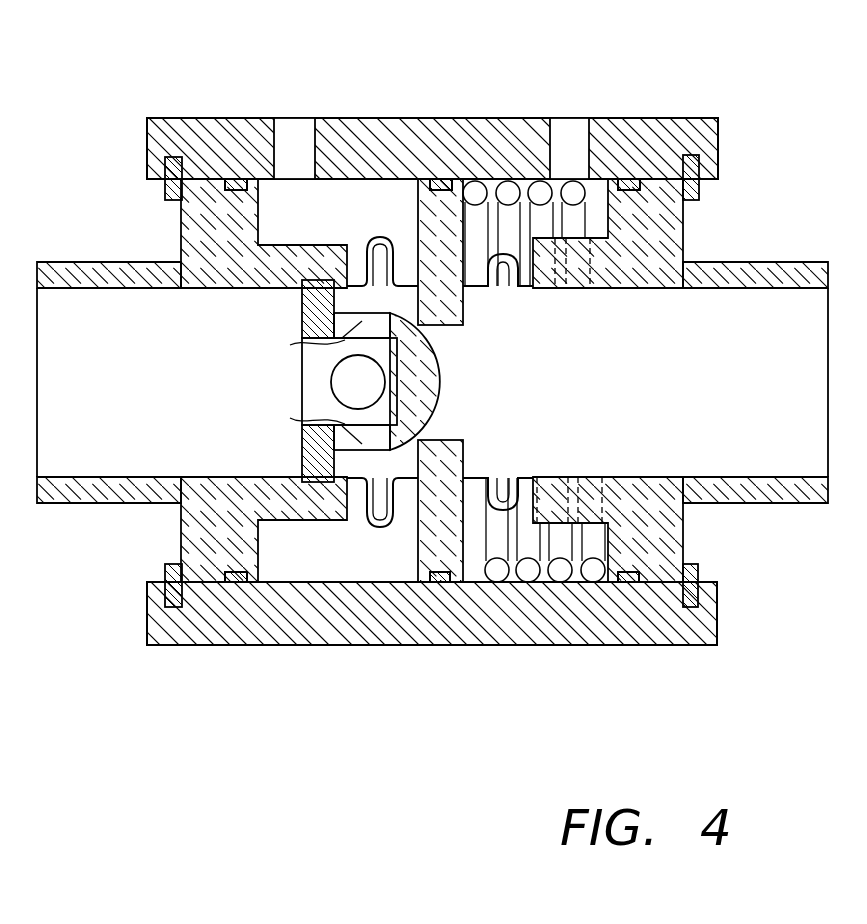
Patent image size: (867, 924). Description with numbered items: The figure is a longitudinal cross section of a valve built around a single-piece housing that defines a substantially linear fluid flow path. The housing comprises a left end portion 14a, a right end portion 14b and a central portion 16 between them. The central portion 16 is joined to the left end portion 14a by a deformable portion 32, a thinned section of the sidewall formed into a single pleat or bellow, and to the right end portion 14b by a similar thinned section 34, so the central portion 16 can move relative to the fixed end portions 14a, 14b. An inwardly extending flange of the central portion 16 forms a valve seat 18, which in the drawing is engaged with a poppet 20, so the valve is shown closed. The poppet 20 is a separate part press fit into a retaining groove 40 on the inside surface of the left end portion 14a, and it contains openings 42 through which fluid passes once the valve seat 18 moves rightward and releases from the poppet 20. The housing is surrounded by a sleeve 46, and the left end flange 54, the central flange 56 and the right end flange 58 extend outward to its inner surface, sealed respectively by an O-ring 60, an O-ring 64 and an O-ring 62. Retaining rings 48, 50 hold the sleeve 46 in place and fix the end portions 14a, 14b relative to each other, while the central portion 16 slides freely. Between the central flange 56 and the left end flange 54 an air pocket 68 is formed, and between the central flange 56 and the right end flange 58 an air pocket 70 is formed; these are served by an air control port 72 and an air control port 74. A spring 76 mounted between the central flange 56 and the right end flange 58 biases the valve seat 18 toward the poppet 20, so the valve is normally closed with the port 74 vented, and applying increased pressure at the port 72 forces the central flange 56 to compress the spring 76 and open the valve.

The left end portion 14a is at (88, 294).
The right end portion 14b is at (772, 294).
The central portion 16 is at (472, 302).
The valve seat 18 is at (460, 440).
The poppet 20 is at (428, 364).
The deformable portion 32 is at (384, 524).
The thinned section 34 is at (498, 492).
The retaining groove 40 is at (322, 282).
The openings 42 is at (300, 410).
The sleeve 46 is at (237, 118).
The retaining ring 48 is at (168, 196).
The retaining ring 50 is at (700, 192).
The left end flange 54 is at (207, 542).
The central flange 56 is at (423, 558).
The right end flange 58 is at (648, 538).
The O-ring 60 is at (234, 582).
The O-ring 62 is at (624, 584).
The O-ring 64 is at (445, 582).
The air pocket 68 is at (322, 573).
The air pocket 70 is at (527, 582).
The air control port 72 is at (302, 147).
The air control port 74 is at (578, 150).
The spring 76 is at (509, 184).